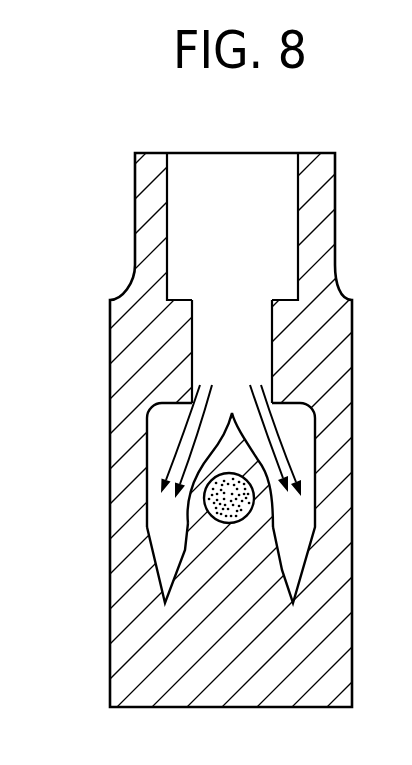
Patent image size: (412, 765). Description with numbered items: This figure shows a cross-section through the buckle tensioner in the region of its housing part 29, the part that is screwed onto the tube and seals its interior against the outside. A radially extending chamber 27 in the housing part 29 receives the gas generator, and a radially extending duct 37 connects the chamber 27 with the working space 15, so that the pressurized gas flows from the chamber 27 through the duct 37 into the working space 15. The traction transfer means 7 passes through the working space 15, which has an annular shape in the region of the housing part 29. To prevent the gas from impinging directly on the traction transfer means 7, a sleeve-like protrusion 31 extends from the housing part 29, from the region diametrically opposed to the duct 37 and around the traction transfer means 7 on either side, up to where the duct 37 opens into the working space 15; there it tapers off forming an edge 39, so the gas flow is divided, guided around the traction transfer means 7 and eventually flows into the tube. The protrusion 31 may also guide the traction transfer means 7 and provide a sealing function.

The chamber 27 is at (254, 190).
The housing part 29 is at (145, 373).
The duct 37 is at (207, 337).
The edge 39 is at (236, 405).
The working space 15 is at (300, 441).
The traction transfer means 7 is at (243, 500).
The protrusion 31 is at (188, 527).